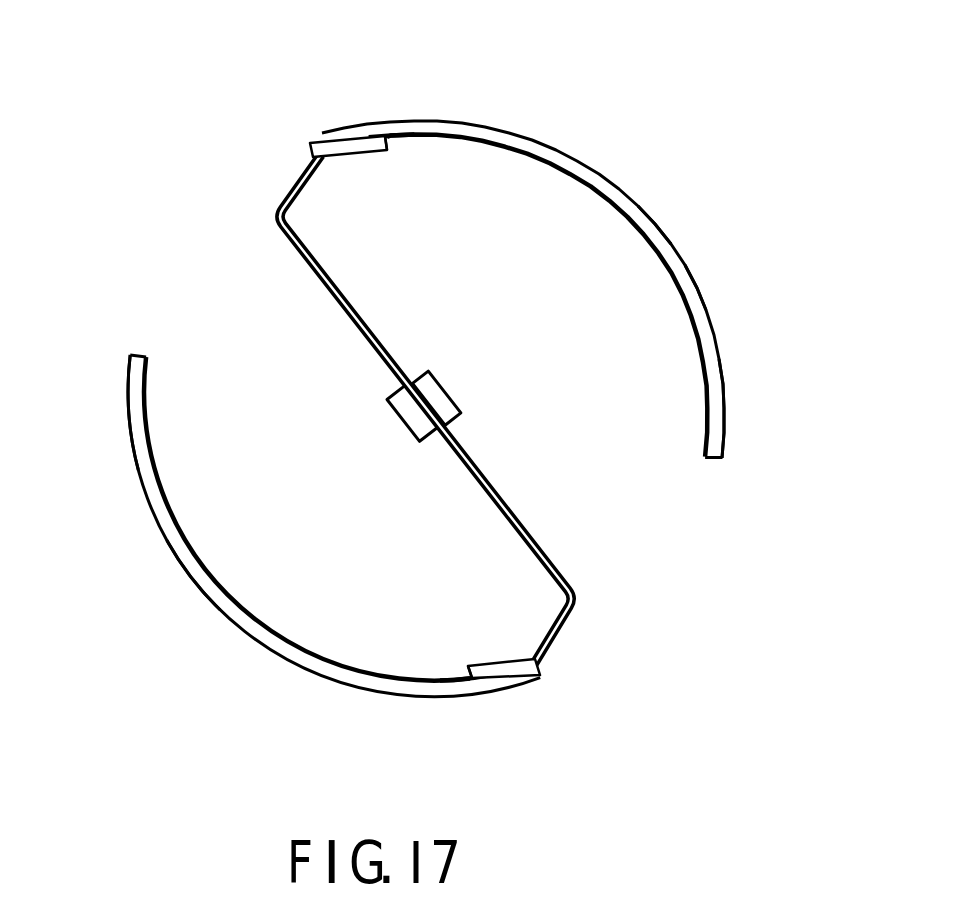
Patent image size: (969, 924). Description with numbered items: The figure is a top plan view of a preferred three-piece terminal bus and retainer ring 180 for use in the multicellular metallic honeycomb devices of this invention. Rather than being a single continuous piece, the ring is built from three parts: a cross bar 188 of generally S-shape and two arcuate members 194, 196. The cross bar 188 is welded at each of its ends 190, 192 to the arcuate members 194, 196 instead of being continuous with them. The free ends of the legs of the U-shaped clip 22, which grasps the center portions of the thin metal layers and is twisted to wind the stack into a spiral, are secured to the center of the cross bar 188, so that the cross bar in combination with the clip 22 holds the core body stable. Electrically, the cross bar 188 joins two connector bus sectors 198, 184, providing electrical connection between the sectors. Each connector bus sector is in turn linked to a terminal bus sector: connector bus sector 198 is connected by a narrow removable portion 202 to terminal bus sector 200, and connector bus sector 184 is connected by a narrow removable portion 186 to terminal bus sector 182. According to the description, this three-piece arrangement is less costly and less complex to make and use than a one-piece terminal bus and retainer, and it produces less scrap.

The U-shaped clip 22 is at (456, 372).
The three-piece terminal bus and retainer ring 180 is at (722, 272).
The terminal bus sector 182 is at (724, 397).
The connector bus sector 184 is at (549, 143).
The narrow removable portion 186 is at (660, 228).
The cross bar 188 is at (474, 466).
The end of cross bar 190 is at (371, 156).
The end of cross bar 192 is at (488, 660).
The arcuate member 194 is at (330, 138).
The arcuate member 196 is at (523, 683).
The connector bus sector 198 is at (400, 694).
The terminal bus sector 200 is at (140, 484).
The narrow removable portion 202 is at (194, 583).